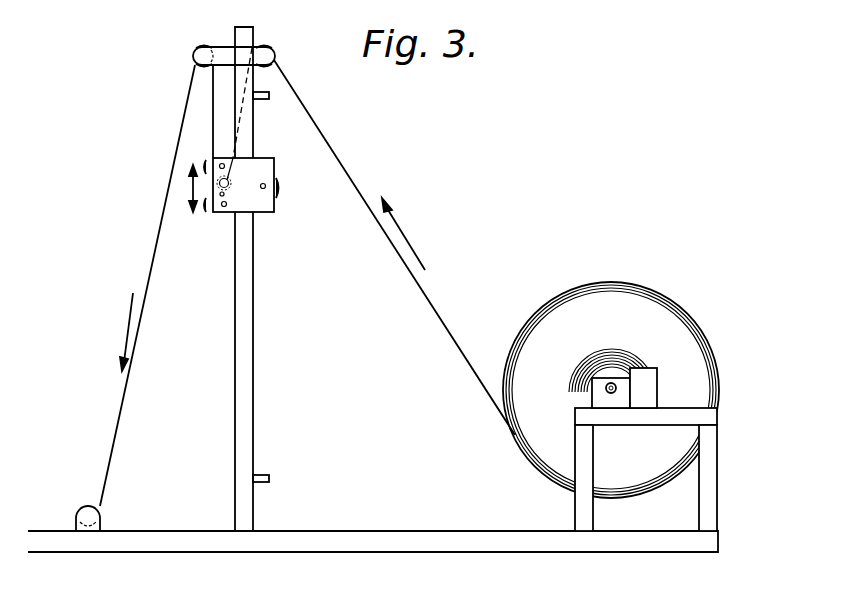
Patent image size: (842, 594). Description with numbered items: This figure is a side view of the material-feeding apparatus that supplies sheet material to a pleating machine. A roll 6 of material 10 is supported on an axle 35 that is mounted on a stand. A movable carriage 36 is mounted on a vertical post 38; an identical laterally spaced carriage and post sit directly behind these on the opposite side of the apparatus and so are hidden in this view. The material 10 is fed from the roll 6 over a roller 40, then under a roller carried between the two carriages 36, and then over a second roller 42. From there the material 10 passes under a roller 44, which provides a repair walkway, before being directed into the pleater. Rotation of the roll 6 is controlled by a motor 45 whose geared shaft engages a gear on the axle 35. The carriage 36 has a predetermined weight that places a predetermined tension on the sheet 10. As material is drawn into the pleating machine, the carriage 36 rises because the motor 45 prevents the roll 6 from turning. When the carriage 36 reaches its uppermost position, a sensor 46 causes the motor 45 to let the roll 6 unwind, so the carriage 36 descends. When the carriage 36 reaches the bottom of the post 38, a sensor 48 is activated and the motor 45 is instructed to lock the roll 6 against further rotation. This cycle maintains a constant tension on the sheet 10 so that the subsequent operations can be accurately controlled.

The roll 6 is at (603, 291).
The material 10 is at (451, 338).
The axle 35 is at (614, 386).
The movable carriage 36 is at (243, 192).
The post 38 is at (249, 348).
The roller 40 is at (277, 58).
The second roller 42 is at (194, 56).
The roller 44 is at (82, 508).
The motor 45 is at (648, 380).
The sensor 46 is at (262, 95).
The sensor 48 is at (270, 483).